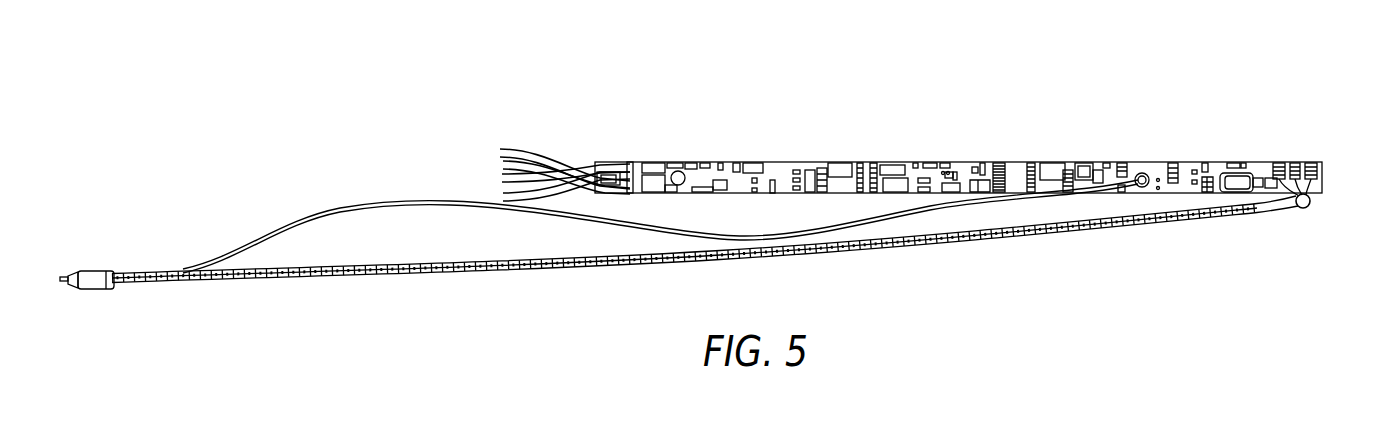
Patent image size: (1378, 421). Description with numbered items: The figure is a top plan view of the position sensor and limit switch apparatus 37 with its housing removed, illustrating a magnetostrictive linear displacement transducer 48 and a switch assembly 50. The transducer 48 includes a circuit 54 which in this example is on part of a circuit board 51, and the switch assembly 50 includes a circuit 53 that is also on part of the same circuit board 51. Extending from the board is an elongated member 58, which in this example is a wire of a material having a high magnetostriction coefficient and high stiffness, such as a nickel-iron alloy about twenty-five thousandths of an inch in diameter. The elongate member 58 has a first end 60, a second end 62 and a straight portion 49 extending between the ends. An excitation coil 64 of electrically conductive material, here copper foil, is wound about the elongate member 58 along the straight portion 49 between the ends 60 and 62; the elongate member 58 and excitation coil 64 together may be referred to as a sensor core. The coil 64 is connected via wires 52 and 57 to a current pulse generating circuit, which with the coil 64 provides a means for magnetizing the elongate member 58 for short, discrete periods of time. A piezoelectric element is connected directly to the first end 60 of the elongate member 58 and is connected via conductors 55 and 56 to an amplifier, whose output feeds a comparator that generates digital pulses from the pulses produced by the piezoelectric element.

The position sensor and limit switch apparatus 37 is at (703, 109).
The switch assembly 50 is at (827, 143).
The circuit 53 is at (935, 158).
The circuit board 51 is at (1018, 160).
The circuit 54 is at (1190, 156).
The magnetostrictive linear displacement transducer 48 is at (1206, 156).
The wire 57 is at (1282, 161).
The conductor 55 is at (1297, 162).
The conductor 56 is at (1324, 162).
The wire 52 is at (338, 212).
The straight portion 49 is at (485, 272).
The elongated member 58 is at (728, 257).
The excitation coil 64 is at (325, 278).
The second end 62 is at (75, 290).
The first end 60 is at (1305, 210).